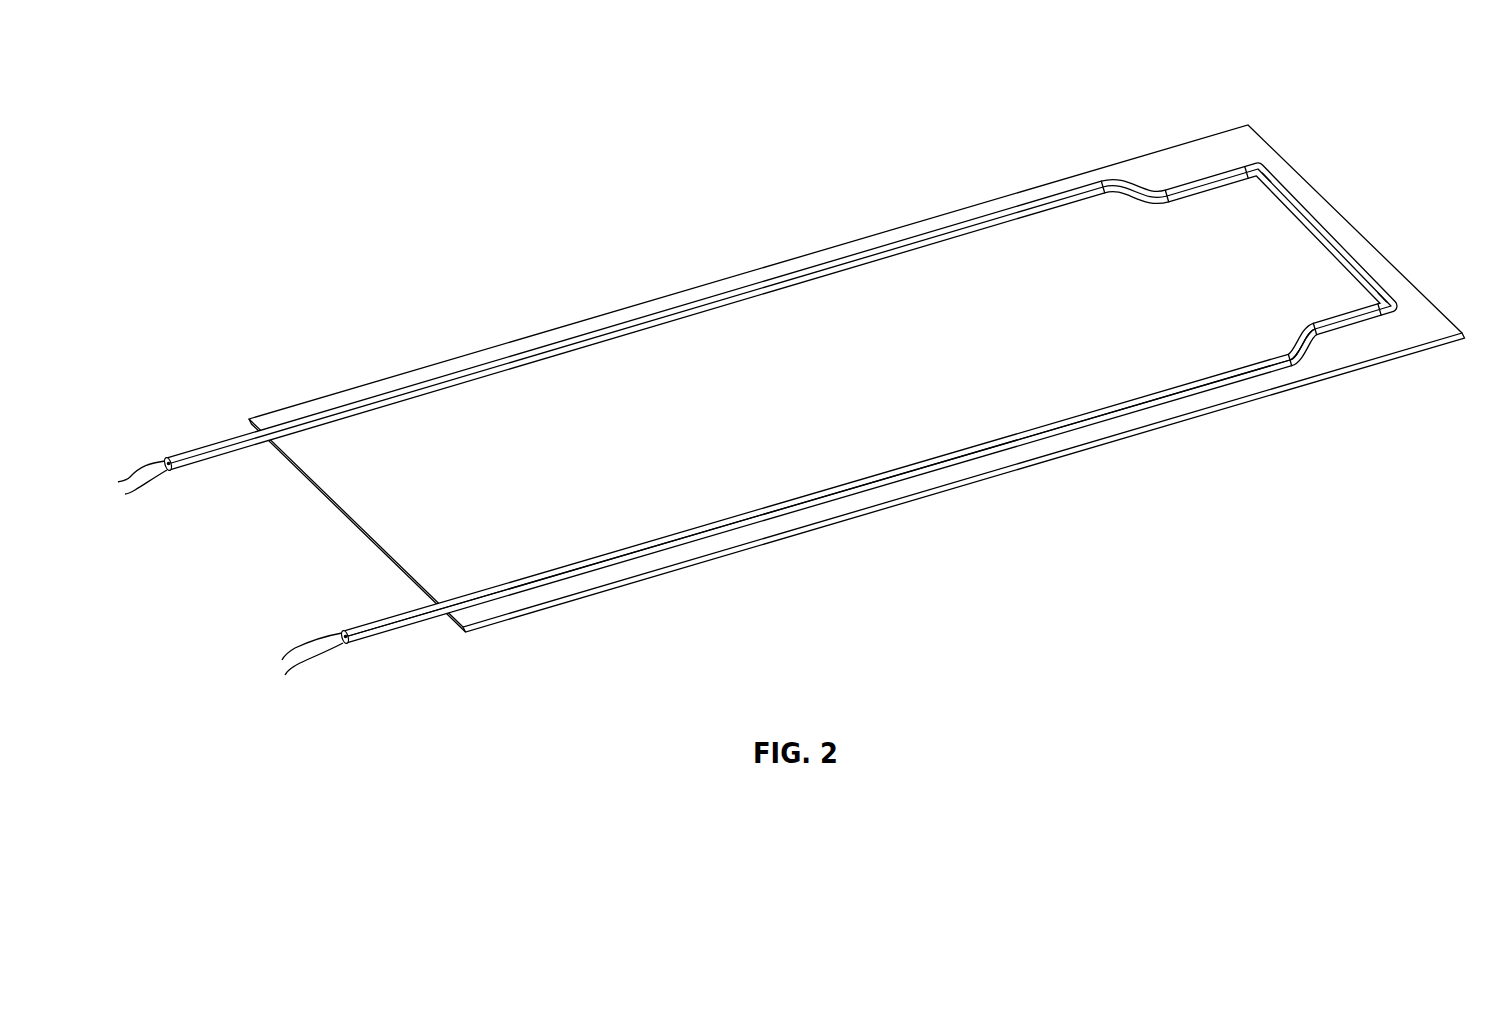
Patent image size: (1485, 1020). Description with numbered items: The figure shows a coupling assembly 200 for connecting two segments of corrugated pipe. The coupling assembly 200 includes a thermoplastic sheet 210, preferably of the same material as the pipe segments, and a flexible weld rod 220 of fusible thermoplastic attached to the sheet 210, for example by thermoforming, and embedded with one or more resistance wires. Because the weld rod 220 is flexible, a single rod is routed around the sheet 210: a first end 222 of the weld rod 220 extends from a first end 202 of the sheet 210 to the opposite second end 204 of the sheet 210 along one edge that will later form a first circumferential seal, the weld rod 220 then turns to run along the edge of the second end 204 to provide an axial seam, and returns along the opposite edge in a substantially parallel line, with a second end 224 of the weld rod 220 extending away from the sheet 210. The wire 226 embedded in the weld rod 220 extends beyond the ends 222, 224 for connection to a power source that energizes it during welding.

The coupling assembly 200 is at (791, 391).
The first end of the sheet 202 is at (338, 402).
The second end of the sheet 204 is at (1200, 155).
The thermoplastic sheet 210 is at (1322, 358).
The flexible weld rod 220 is at (633, 556).
The first end of the weld rod 222 is at (403, 628).
The second end of the weld rod 224 is at (192, 447).
The wire 226 is at (138, 492).